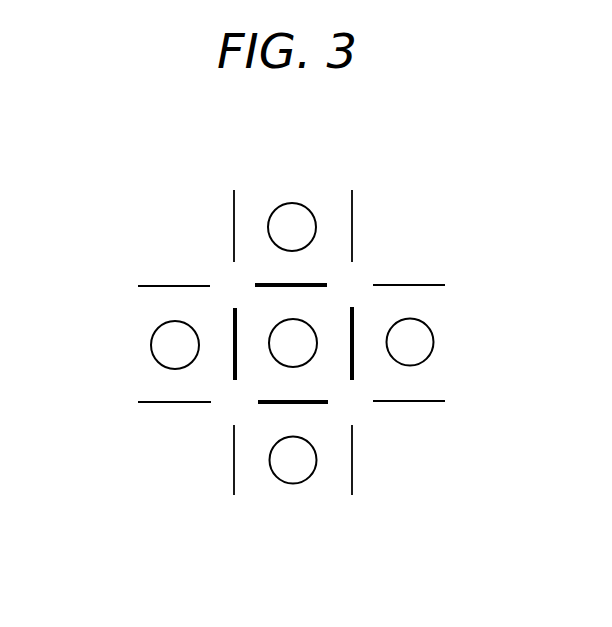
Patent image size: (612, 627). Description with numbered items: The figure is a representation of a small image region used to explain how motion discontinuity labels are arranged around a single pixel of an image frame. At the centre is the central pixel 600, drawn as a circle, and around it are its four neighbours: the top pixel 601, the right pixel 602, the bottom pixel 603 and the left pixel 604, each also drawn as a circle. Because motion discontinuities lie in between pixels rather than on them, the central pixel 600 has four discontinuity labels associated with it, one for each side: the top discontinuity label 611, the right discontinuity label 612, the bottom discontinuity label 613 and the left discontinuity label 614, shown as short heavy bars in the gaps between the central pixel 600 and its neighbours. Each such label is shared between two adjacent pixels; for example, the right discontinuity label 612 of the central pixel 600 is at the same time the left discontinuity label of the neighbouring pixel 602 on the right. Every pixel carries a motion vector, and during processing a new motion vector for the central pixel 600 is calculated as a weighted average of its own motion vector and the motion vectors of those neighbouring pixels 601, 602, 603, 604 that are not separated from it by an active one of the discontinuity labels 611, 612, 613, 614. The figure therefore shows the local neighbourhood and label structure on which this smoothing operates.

The central pixel 600 is at (277, 322).
The top neighbouring pixel 601 is at (291, 203).
The right neighbouring pixel 602 is at (434, 341).
The bottom neighbouring pixel 603 is at (295, 483).
The left neighbouring pixel 604 is at (151, 347).
The top discontinuity label 611 is at (312, 286).
The right discontinuity label 612 is at (352, 366).
The bottom discontinuity label 613 is at (268, 402).
The left discontinuity label 614 is at (235, 368).